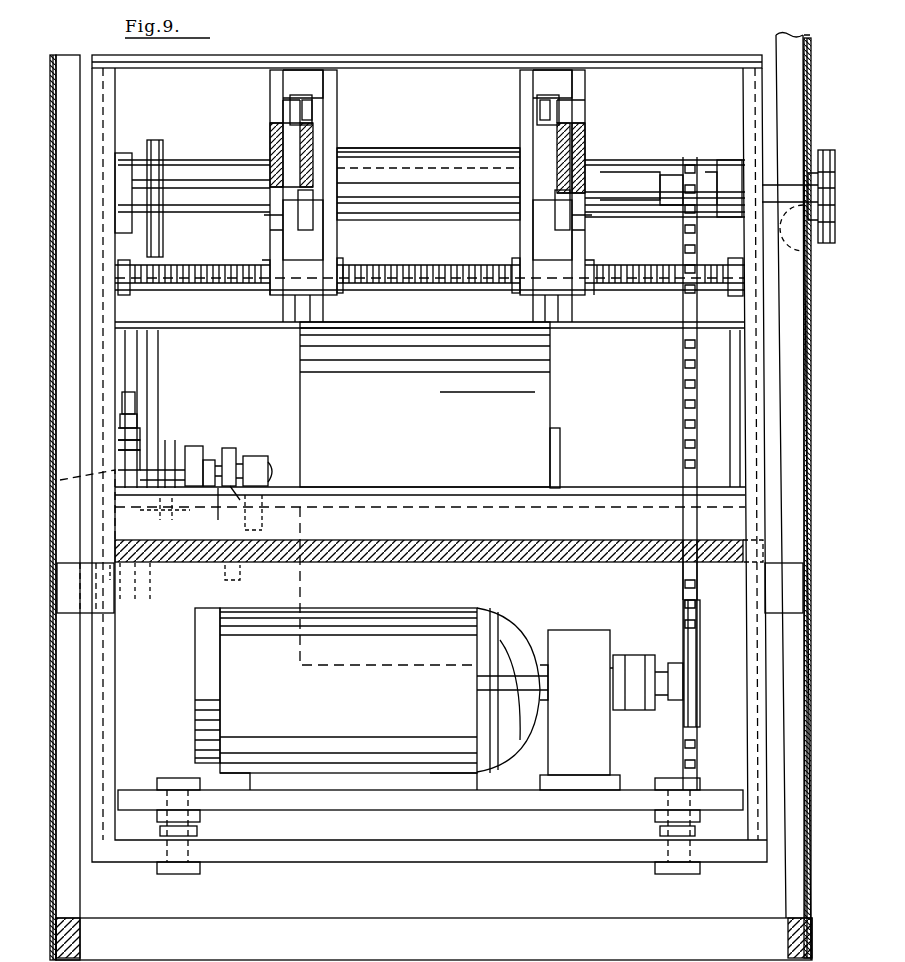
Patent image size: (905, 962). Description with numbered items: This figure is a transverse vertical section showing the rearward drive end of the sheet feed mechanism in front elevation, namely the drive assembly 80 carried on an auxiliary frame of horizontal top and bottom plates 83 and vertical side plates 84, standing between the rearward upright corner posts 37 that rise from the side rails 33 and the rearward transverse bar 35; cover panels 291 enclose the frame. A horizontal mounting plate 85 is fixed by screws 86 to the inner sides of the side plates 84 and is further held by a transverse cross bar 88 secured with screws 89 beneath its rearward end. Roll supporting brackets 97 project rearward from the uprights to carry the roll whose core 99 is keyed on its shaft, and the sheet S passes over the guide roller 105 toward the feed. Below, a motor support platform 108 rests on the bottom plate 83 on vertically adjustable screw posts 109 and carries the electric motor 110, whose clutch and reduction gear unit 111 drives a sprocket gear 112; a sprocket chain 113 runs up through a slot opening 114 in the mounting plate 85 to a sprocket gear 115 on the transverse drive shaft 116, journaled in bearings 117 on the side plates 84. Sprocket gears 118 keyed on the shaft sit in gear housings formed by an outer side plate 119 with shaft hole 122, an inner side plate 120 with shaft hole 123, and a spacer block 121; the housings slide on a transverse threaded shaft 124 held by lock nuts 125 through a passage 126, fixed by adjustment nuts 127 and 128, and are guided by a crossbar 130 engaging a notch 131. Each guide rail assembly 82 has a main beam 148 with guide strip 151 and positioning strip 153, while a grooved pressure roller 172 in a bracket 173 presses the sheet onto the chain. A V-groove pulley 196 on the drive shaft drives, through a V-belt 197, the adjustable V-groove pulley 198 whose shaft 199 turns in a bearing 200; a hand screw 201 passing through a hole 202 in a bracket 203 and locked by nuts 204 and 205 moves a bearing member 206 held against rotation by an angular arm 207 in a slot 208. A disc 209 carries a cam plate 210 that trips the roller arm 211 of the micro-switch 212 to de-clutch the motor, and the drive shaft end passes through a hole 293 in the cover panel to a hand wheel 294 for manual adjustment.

The side rails 33 is at (64, 938).
The transverse bar 35 is at (300, 918).
The upright corner posts 37 is at (60, 690).
The drive assembly 80 is at (318, 44).
The sprocket chain carrier guide rail assembly 82 is at (255, 140).
The top and bottom plates 83 is at (440, 56).
The vertical side plates 84 is at (110, 663).
The horizontal mounting plate 85 is at (394, 540).
The screws 86 is at (85, 563).
The transverse cross bar 88 is at (170, 610).
The screws 89 is at (232, 580).
The roll supporting brackets 97 is at (140, 352).
The core 99 is at (560, 445).
The guide roller 105 is at (427, 214).
The motor support platform 108 is at (392, 802).
The screw posts 109 is at (195, 826).
The electric motor 110 is at (388, 612).
The clutch and reduction gear unit 111 is at (610, 645).
The sprocket gear 112 is at (701, 709).
The sprocket chain 113 is at (695, 645).
The slot opening 114 is at (672, 565).
The sprocket gear 115 is at (700, 176).
The transverse drive shaft 116 is at (660, 205).
The bearings 117 is at (123, 152).
The sprocket gears 118 is at (338, 228).
The outer rectangular side plate 119 is at (268, 236).
The inner rectangular side plate 120 is at (338, 242).
The spacer block 121 is at (286, 296).
The shaft receiving hole 122 is at (270, 222).
The shaft receiving hole 123 is at (355, 150).
The transverse threaded shaft 124 is at (420, 290).
The lock nuts 125 is at (124, 295).
The passage 126 is at (306, 296).
The adjustment nut 127 is at (268, 296).
The adjustment nut 128 is at (342, 294).
The crossbar 130 is at (224, 322).
The notch 131 is at (262, 324).
The main beam 148 is at (286, 124).
The guide strip 151 is at (320, 128).
The positioning strip 153 is at (268, 140).
The grooved pressure roller 172 is at (318, 106).
The bracket 173 is at (335, 80).
The V-groove pulley 196 is at (163, 146).
The V-belt 197 is at (156, 372).
The adjustable V-groove pulley 198 is at (166, 441).
The shaft 199 is at (60, 480).
The bearing 200 is at (120, 460).
The hand screw 201 is at (250, 456).
The hole 202 is at (231, 446).
The bracket 203 is at (222, 498).
The lock nut 204 is at (208, 458).
The lock nut 205 is at (238, 497).
The bearing member 206 is at (182, 456).
The angular arm 207 is at (164, 516).
The slot 208 is at (228, 516).
The disc 209 is at (120, 434).
The cam plate 210 is at (122, 422).
The roller arm 211 is at (122, 398).
The micro-switch 212 is at (120, 446).
The cover panels 291 is at (52, 262).
The hole 293 is at (810, 252).
The hand wheel 294 is at (830, 150).
The sheet S is at (428, 148).